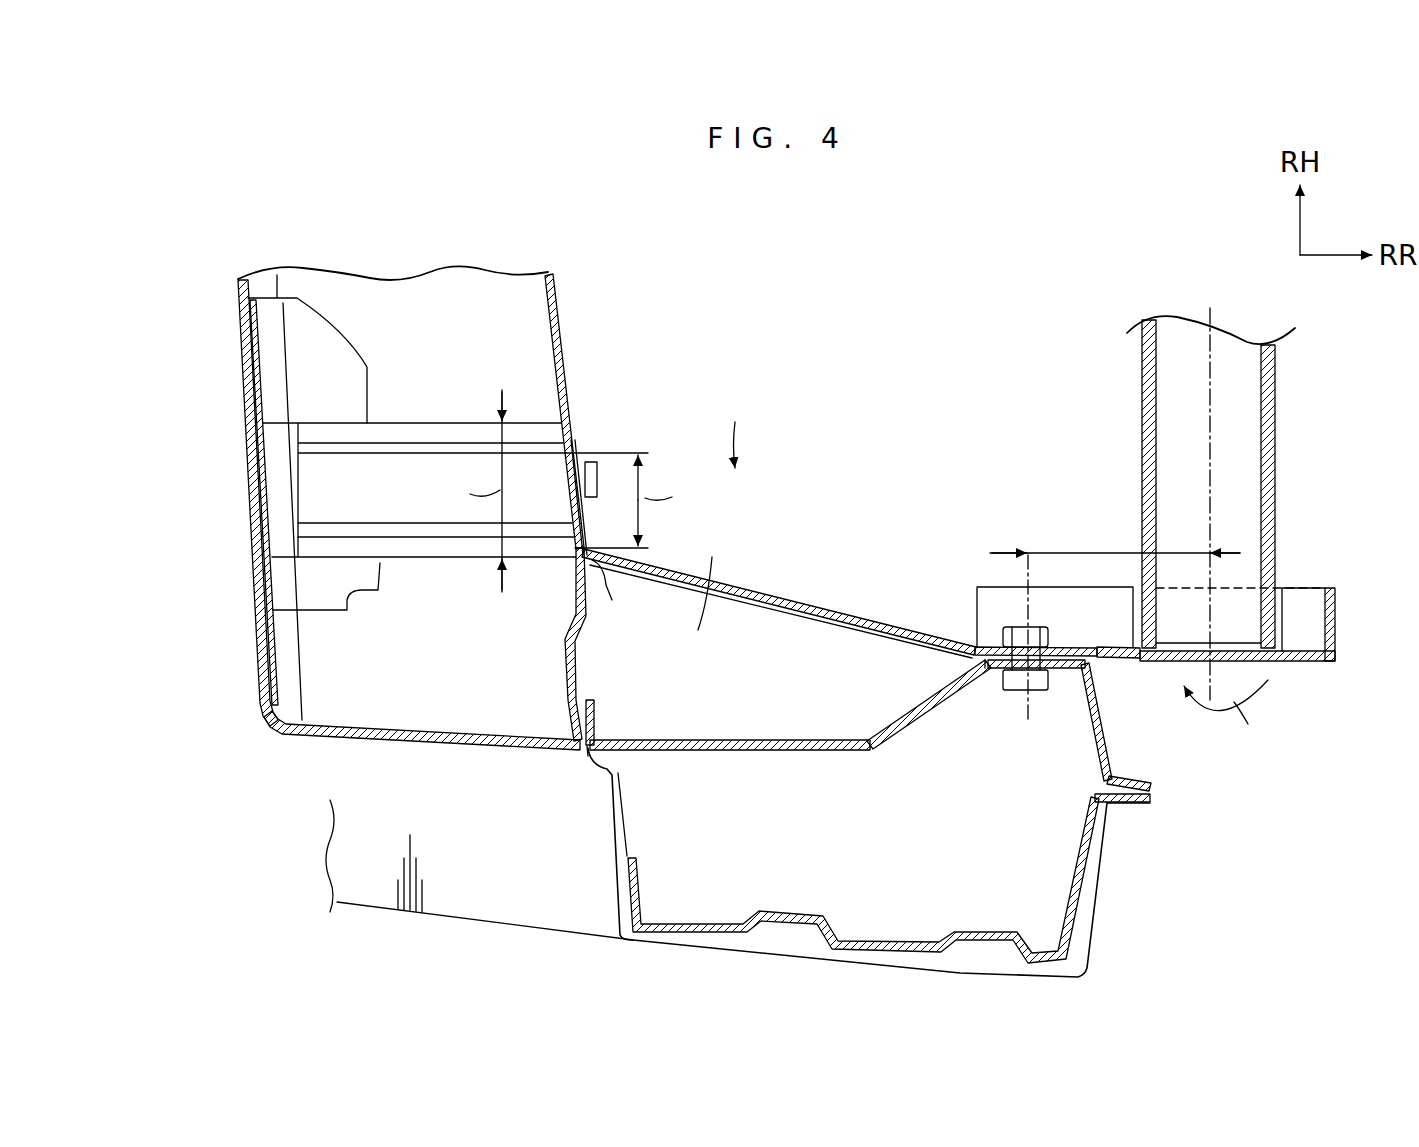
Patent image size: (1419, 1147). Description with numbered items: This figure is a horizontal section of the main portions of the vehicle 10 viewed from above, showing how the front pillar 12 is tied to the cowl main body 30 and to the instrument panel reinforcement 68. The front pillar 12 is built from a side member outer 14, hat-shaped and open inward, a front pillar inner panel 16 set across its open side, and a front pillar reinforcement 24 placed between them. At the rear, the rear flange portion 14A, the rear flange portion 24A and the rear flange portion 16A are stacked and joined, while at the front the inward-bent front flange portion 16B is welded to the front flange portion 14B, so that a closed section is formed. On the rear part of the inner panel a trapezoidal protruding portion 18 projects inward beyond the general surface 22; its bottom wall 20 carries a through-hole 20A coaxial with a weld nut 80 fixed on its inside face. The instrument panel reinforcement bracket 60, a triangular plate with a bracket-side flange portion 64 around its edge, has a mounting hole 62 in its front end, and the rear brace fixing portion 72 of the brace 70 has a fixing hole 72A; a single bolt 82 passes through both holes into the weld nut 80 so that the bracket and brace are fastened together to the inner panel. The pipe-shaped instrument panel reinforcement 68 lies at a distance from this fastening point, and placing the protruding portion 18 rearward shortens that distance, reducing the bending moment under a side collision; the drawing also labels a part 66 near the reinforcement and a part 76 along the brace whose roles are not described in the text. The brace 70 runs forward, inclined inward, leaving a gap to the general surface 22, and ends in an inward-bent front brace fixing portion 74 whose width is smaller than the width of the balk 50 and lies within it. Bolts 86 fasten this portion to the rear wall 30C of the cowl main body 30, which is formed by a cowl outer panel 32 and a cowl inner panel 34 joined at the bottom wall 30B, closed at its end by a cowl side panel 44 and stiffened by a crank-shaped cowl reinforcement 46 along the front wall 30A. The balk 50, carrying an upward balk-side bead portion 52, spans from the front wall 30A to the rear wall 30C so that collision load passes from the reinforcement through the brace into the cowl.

The vehicle 10 is at (330, 216).
The front pillar 12 is at (914, 725).
The side member outer 14 is at (784, 861).
The rear flange portion 14A is at (1130, 808).
The front flange portion 14B is at (586, 752).
The front pillar inner panel 16 is at (1100, 708).
The rear flange portion 16A is at (1152, 785).
The front flange portion 16B is at (600, 722).
The protruding portion 18 is at (922, 704).
The bottom wall 20 is at (1055, 672).
The through-hole 20A is at (998, 670).
The general surface 22 is at (743, 740).
The front pillar reinforcement 24 is at (1075, 860).
The rear flange portion 24A is at (1152, 800).
The cowl main body 30 is at (414, 509).
The front wall 30A is at (252, 440).
The bottom wall 30B is at (410, 300).
The rear wall 30C is at (568, 362).
The cowl outer panel 32 is at (558, 310).
The cowl inner panel 34 is at (240, 346).
The cowl side panel 44 is at (398, 738).
The cowl reinforcement 46 is at (338, 612).
The balk 50 is at (430, 416).
The balk-side bead portion 52 is at (408, 518).
The instrument panel reinforcement bracket 60 is at (1167, 628).
The mounting hole 62 is at (985, 642).
The bracket-side flange portion 64 is at (1292, 590).
The spacer 66 is at (1256, 662).
The instrument panel reinforcement 68 is at (1278, 372).
The brace 70 is at (848, 599).
The rear brace fixing portion 72 is at (972, 653).
The fixing hole 72A is at (1043, 636).
The front brace fixing portion 74 is at (607, 578).
The upper wall of cover 76 is at (776, 590).
The weld nut 80 is at (995, 657).
The bolt 82 is at (1018, 630).
The bolts 86 is at (588, 462).